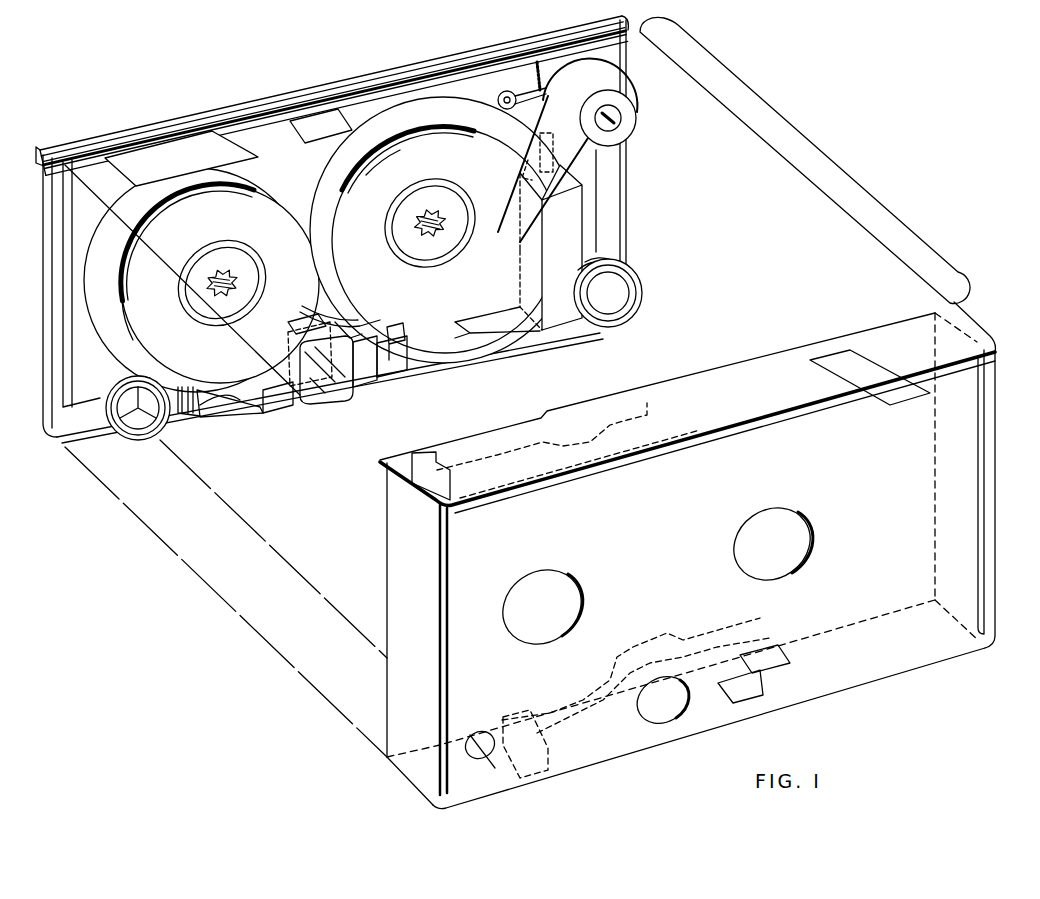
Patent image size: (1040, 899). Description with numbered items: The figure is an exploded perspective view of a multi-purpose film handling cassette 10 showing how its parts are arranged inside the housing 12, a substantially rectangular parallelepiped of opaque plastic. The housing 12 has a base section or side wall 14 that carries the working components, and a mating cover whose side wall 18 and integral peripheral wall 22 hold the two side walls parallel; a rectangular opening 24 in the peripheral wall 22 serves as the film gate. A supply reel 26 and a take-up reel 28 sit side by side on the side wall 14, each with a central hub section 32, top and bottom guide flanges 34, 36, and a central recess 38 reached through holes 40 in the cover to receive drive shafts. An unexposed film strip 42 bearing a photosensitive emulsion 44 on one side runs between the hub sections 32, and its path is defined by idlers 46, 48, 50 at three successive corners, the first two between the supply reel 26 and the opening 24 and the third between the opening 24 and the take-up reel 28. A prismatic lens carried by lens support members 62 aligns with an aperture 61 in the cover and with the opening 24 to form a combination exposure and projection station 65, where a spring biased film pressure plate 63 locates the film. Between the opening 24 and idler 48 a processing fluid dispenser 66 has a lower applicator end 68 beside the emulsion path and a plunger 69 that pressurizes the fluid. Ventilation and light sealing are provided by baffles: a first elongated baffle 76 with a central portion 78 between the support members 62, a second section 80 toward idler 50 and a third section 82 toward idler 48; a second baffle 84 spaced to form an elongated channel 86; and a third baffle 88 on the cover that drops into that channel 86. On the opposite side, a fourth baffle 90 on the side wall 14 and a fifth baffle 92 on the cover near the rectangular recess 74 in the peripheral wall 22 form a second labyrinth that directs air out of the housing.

The multi-purpose film handling cassette 10 is at (948, 170).
The housing 12 is at (815, 142).
The base section or side wall 14 is at (466, 52).
The side wall 18 is at (790, 438).
The peripheral wall 22 is at (802, 360).
The opening 24 is at (614, 740).
The supply reel 26 is at (380, 184).
The take-up reel 28 is at (170, 244).
The central hub section 32 is at (250, 280).
The top guide flange 34 is at (118, 322).
The bottom guide flange 36 is at (114, 204).
The central recess 38 is at (216, 270).
The holes 40 is at (540, 588).
The film strip 42 is at (560, 138).
The photosensitive emulsion 44 is at (622, 184).
The guide roller or idler 46 is at (636, 120).
The guide roller or idler 48 is at (612, 290).
The guide roller or idler 50 is at (138, 430).
The aperture 61 is at (660, 694).
The lens support members 62 is at (273, 398).
The film pressure plate 63 is at (237, 412).
The combination exposure and projection station 65 is at (316, 400).
The processing fluid dispenser 66 is at (536, 272).
The lower applicator end 68 is at (550, 322).
The plunger 69 is at (537, 136).
The recess 74 is at (578, 420).
The first elongated baffle 76 is at (396, 376).
The central portion 78 is at (296, 334).
The second section 80 is at (196, 414).
The third section 82 is at (392, 328).
The second baffle 84 is at (322, 305).
The elongated channel 86 is at (352, 326).
The third baffle 88 is at (645, 640).
The fourth elongated blade-like baffle 90 is at (170, 156).
The fifth baffle 92 is at (497, 432).